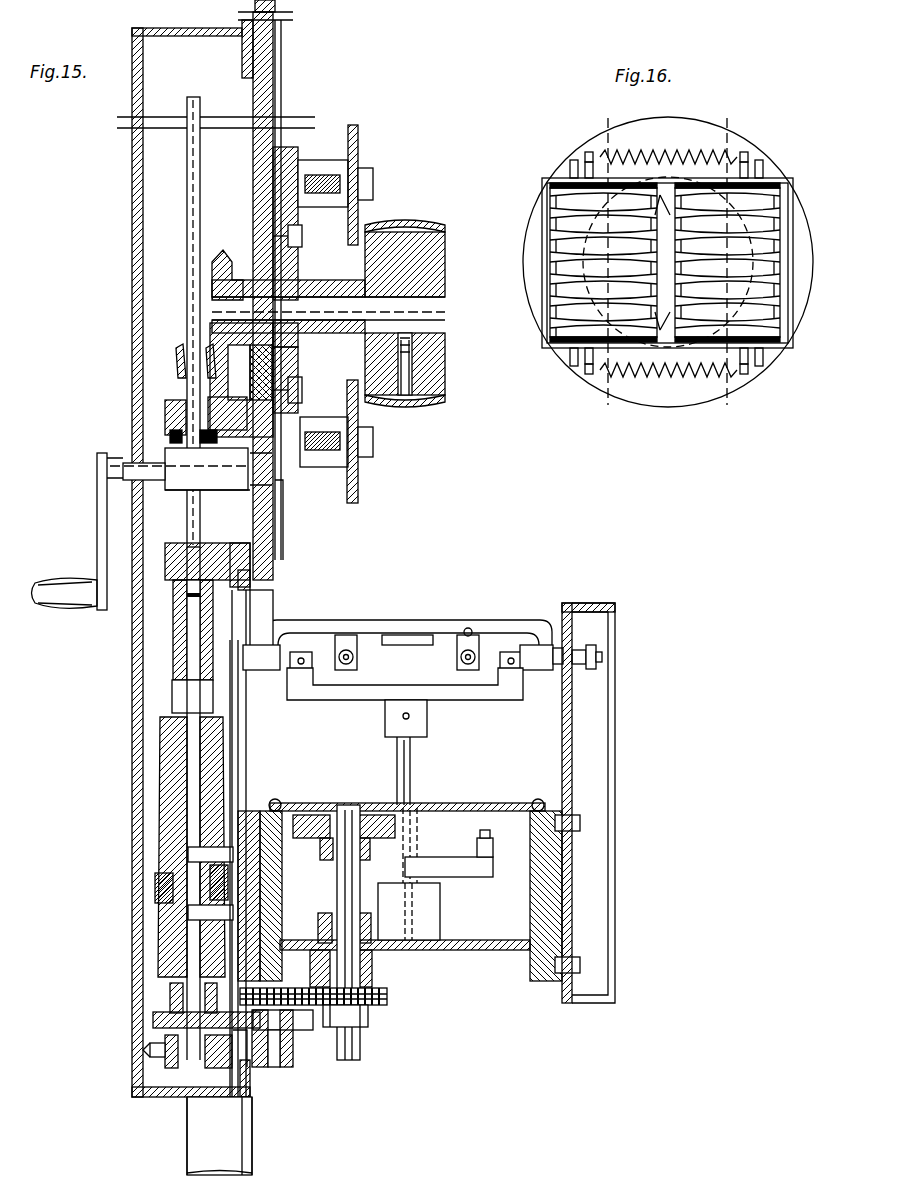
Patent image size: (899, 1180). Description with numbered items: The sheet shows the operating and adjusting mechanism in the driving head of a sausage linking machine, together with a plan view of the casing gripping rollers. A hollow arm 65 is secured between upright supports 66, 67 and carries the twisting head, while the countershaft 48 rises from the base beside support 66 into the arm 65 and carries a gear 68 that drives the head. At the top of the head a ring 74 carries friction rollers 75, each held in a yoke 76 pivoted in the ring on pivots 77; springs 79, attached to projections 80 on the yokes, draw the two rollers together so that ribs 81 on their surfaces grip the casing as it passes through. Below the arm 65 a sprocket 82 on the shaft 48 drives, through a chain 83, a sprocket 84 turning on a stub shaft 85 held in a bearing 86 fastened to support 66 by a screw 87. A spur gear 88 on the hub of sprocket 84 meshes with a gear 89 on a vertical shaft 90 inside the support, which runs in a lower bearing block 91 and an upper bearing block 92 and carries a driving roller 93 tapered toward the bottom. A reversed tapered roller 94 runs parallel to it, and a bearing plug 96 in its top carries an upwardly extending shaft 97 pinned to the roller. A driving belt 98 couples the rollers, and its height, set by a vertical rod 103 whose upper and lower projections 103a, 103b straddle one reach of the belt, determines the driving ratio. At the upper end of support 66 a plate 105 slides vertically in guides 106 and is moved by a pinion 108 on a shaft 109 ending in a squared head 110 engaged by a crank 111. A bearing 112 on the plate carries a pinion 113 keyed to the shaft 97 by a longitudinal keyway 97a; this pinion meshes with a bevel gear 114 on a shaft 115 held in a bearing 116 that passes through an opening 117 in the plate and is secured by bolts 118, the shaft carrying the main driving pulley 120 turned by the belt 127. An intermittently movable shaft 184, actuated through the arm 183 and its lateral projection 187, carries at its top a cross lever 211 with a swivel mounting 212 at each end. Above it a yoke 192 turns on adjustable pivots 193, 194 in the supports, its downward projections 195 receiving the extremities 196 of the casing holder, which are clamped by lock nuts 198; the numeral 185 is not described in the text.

In FIG. 15, the countershaft 48 is at (337, 888).
In FIG. 15, the arm 65 is at (532, 905).
In FIG. 15, the upright support 66 is at (246, 778).
In FIG. 15, the upright support 67 is at (570, 760).
In FIG. 15, the gear 68 is at (302, 840).
In FIG. 16, the ring 74 is at (532, 280).
In FIG. 16, the friction roller 75 is at (555, 218).
In FIG. 16, the yoke 76 is at (545, 185).
In FIG. 16, the pivot 77 is at (762, 165).
In FIG. 16, the spring 79 is at (660, 152).
In FIG. 16, the projection 80 is at (587, 156).
In FIG. 16, the rib 81 is at (500, 358).
In FIG. 15, the sprocket 82 is at (360, 1015).
In FIG. 15, the chain 83 is at (385, 990).
In FIG. 15, the sprocket 84 is at (270, 1000).
In FIG. 15, the stub shaft 85 is at (275, 1068).
In FIG. 15, the bearing 86 is at (290, 1067).
In FIG. 15, the fastening screw 87 is at (293, 1060).
In FIG. 15, the spur gear 88 is at (285, 1048).
In FIG. 15, the gear 89 is at (148, 1015).
In FIG. 15, the vertical shaft 90 is at (195, 750).
In FIG. 15, the bearing block 91 is at (165, 1060).
In FIG. 15, the bearing block 92 is at (218, 540).
In FIG. 15, the driving roller 93 is at (182, 780).
In FIG. 15, the reversed tapered roller 94 is at (178, 700).
In FIG. 15, the bearing plug 96 is at (190, 640).
In FIG. 15, the shaft 97 is at (186, 510).
In FIG. 15, the longitudinal keyway 97a is at (185, 190).
In FIG. 15, the driving belt 98 is at (155, 890).
In FIG. 15, the vertical rod 103 is at (250, 770).
In FIG. 15, the upper projection 103a is at (165, 852).
In FIG. 15, the lower projection 103b is at (222, 925).
In FIG. 15, the plate 105 is at (283, 100).
In FIG. 15, the guide 106 is at (283, 140).
In FIG. 15, the pinion 108 is at (232, 490).
In FIG. 15, the shaft 109 is at (165, 457).
In FIG. 15, the squared head 110 is at (107, 492).
In FIG. 15, the crank 111 is at (97, 522).
In FIG. 15, the bearing 112 is at (165, 412).
In FIG. 15, the pinion 113 is at (183, 352).
In FIG. 15, the bevel gear 114 is at (216, 255).
In FIG. 15, the shaft 115 is at (296, 300).
In FIG. 15, the bearing 116 is at (285, 348).
In FIG. 15, the opening 117 is at (285, 372).
In FIG. 15, the bolt 118 is at (290, 236).
In FIG. 15, the main driving pulley 120 is at (437, 268).
In FIG. 15, the driving belt 127 is at (405, 225).
In FIG. 15, the arm 183 is at (420, 830).
In FIG. 15, the intermittently movable shaft 184 is at (412, 758).
In FIG. 15, the housing top plate 185 is at (505, 792).
In FIG. 15, the lateral projection 187 is at (450, 870).
In FIG. 15, the yoke 192 is at (327, 622).
In FIG. 15, the adjustable pivot 193 is at (255, 625).
In FIG. 15, the adjustable pivot 194 is at (552, 640).
In FIG. 15, the downward projection 195 is at (360, 655).
In FIG. 15, the extremity 196 is at (312, 668).
In FIG. 15, the lock nut 198 is at (358, 665).
In FIG. 15, the cross lever 211 is at (355, 700).
In FIG. 15, the swivel mounting 212 is at (280, 672).